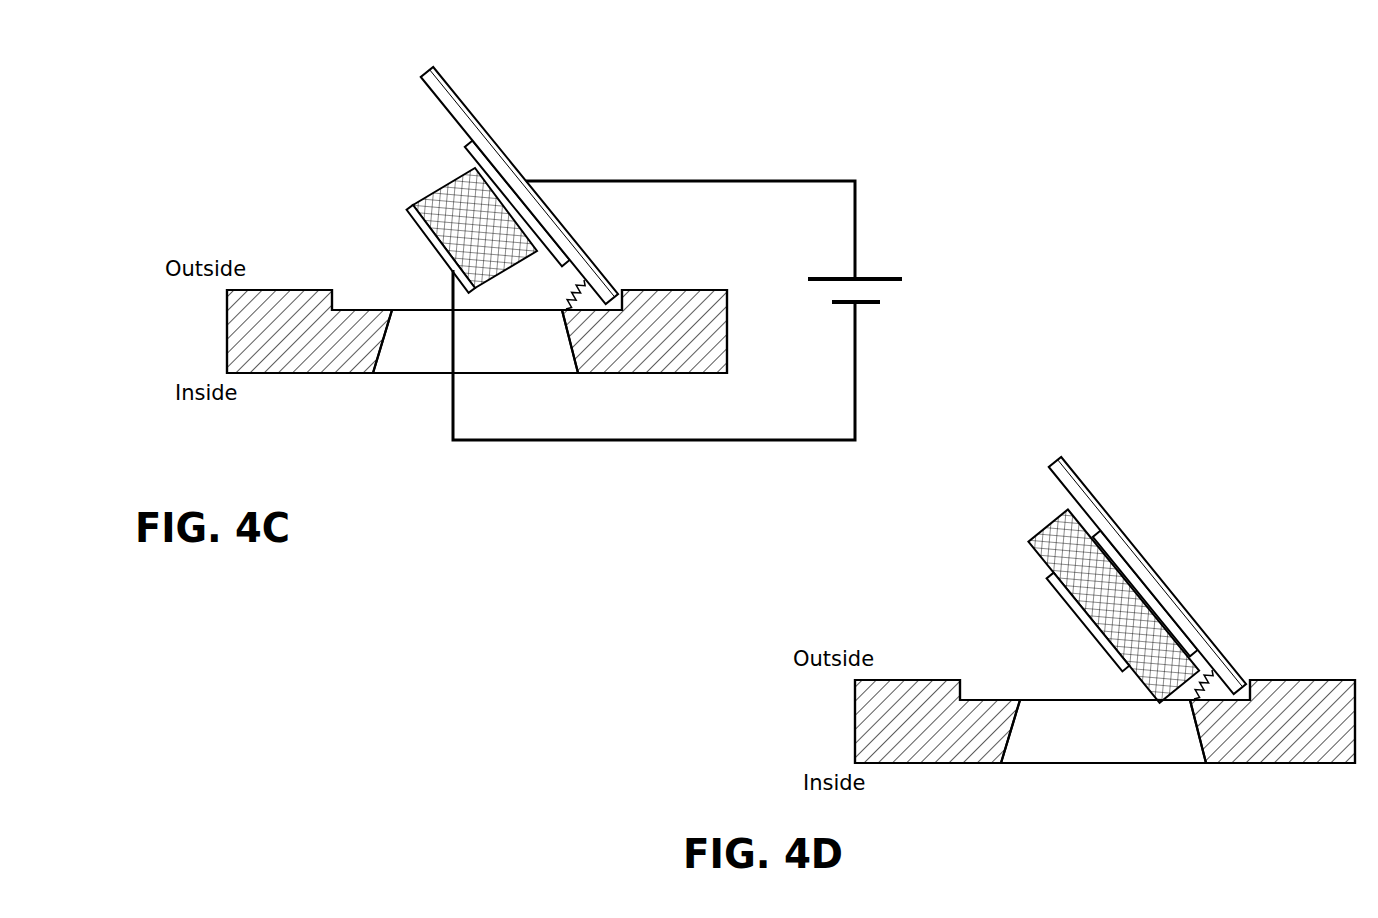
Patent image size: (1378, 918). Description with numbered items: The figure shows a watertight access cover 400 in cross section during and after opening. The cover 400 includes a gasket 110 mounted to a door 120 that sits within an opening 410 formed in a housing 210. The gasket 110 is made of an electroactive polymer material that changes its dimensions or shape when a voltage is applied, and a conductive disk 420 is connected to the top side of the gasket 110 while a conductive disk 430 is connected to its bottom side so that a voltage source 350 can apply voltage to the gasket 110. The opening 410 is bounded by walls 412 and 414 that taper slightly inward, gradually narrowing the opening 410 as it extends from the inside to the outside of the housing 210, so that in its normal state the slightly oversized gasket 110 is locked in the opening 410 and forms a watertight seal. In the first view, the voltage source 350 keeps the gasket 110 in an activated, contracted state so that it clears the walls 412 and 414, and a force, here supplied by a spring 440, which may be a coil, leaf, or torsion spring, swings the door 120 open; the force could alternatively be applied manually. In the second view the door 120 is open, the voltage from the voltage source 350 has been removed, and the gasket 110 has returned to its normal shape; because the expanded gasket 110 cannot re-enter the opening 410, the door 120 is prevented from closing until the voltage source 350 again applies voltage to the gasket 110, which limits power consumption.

In FIG. 4C, the gasket 110 is at (430, 184).
In FIG. 4D, the gasket 110 is at (1040, 531).
In FIG. 4C, the door 120 is at (523, 166).
In FIG. 4D, the door 120 is at (1153, 556).
In FIG. 4C, the housing 210 is at (271, 296).
In FIG. 4D, the housing 210 is at (899, 686).
In FIG. 4C, the voltage source 350 is at (875, 269).
In FIG. 4C, the watertight access cover 400 is at (548, 245).
In FIG. 4D, the watertight access cover 400 is at (1167, 636).
In FIG. 4C, the opening 410 is at (409, 368).
In FIG. 4D, the opening 410 is at (1037, 758).
In FIG. 4C, the wall 412 is at (385, 352).
In FIG. 4D, the wall 412 is at (1013, 742).
In FIG. 4C, the wall 414 is at (560, 352).
In FIG. 4D, the wall 414 is at (1188, 742).
In FIG. 4C, the conductive disk 420 is at (486, 160).
In FIG. 4D, the conductive disk 420 is at (1113, 555).
In FIG. 4C, the conductive disk 430 is at (421, 232).
In FIG. 4D, the conductive disk 430 is at (1073, 612).
In FIG. 4C, the spring 440 is at (557, 302).
In FIG. 4D, the spring 440 is at (1188, 693).